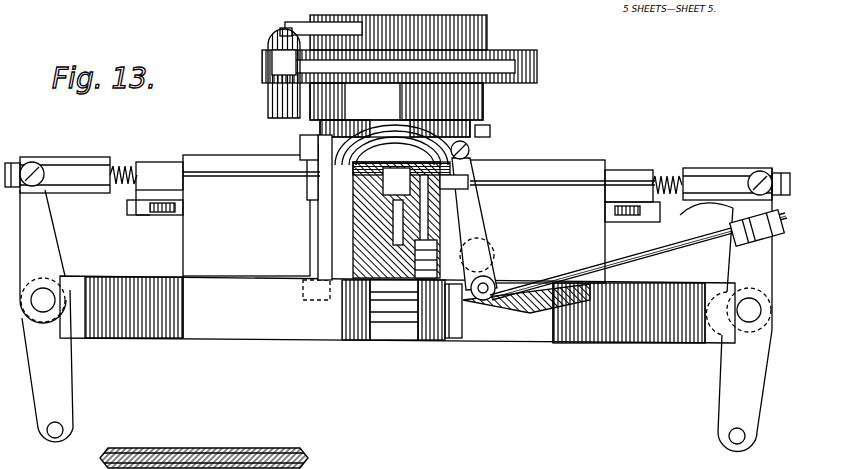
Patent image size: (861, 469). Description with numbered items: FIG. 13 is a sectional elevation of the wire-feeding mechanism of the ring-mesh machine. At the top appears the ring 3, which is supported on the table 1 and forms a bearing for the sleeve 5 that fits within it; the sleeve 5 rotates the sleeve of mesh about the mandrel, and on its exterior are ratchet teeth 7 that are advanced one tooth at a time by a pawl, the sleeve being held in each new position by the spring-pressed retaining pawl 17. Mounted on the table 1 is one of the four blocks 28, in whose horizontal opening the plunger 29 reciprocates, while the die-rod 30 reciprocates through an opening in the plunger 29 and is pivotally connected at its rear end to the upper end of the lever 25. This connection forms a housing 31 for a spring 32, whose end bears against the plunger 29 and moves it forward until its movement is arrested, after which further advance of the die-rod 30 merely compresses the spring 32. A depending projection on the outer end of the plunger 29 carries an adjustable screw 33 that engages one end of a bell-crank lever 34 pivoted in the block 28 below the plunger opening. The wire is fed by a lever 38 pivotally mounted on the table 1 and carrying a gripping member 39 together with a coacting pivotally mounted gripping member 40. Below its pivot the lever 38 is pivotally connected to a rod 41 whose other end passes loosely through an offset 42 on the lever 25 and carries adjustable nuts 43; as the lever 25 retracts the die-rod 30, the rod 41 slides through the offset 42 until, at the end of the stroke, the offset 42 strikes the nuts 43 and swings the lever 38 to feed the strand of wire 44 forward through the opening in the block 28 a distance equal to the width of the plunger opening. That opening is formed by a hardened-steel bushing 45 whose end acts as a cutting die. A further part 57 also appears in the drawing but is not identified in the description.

The table 1 is at (550, 335).
The ring 3 is at (396, 101).
The sleeve 5 is at (395, 129).
The ratchet teeth 7 is at (488, 26).
The spring-pressed retaining pawl 17 is at (293, 25).
The lever 25 is at (58, 368).
The block 28 is at (394, 219).
The plunger 29 is at (630, 153).
The die-rod 30 is at (133, 165).
The housing 31 is at (58, 157).
The spring 32 is at (125, 180).
The adjustable screw 33 is at (130, 212).
The bell-crank lever 34 is at (178, 210).
The lever 38 is at (320, 219).
The gripping member 39 is at (310, 186).
The coacting pivotally mounted gripping member 40 is at (304, 152).
The rod 41 is at (550, 268).
The offset 42 is at (753, 246).
The adjustable nuts 43 is at (706, 214).
The strand of wire 44 is at (320, 176).
The bushing 45 is at (444, 205).
The stop 57 is at (490, 130).